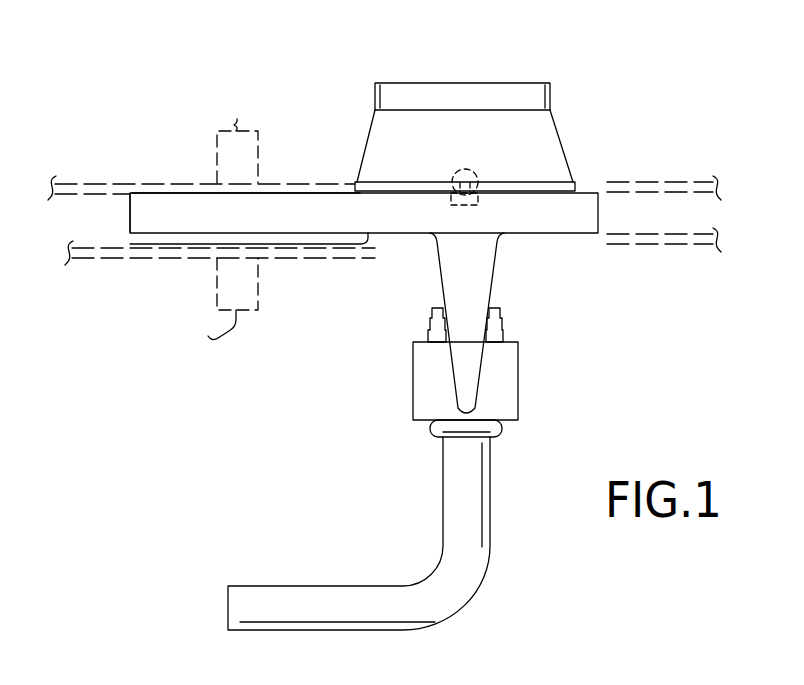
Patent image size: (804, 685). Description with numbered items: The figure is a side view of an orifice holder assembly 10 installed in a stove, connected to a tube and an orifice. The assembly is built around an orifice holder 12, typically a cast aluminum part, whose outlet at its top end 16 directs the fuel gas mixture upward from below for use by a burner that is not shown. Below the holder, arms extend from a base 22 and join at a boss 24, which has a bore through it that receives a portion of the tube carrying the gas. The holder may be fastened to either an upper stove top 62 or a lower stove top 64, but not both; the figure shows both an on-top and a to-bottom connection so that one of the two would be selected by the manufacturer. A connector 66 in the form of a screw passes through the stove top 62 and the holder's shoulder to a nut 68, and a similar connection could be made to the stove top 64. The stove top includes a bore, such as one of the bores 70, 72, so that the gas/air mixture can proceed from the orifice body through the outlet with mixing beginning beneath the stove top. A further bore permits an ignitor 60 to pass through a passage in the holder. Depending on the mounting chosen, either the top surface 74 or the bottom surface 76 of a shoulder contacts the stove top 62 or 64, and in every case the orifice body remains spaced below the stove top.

The orifice holder assembly 10 is at (512, 105).
The orifice holder 12 is at (548, 168).
The top end 16 is at (455, 83).
The base 22 is at (357, 201).
The boss 24 is at (507, 377).
The ignitor 60 is at (228, 140).
The stove top 62 is at (680, 178).
The stove top 64 is at (700, 243).
The connector 66 is at (465, 172).
The nut 68 is at (481, 206).
The bore 70 is at (590, 185).
The bore 72 is at (558, 236).
The top surface 74 is at (150, 192).
The bottom surface 76 is at (130, 221).